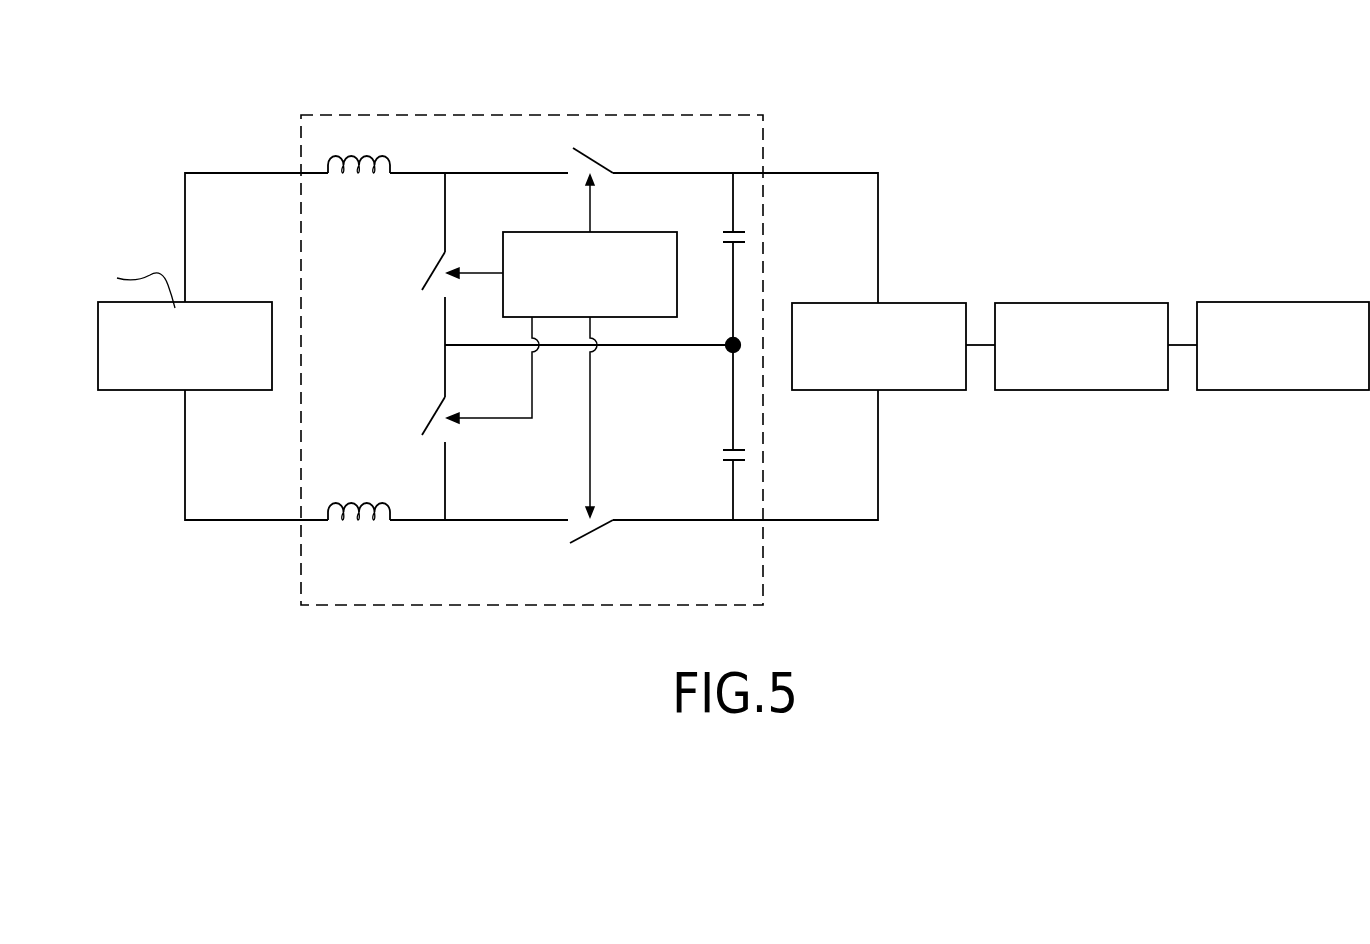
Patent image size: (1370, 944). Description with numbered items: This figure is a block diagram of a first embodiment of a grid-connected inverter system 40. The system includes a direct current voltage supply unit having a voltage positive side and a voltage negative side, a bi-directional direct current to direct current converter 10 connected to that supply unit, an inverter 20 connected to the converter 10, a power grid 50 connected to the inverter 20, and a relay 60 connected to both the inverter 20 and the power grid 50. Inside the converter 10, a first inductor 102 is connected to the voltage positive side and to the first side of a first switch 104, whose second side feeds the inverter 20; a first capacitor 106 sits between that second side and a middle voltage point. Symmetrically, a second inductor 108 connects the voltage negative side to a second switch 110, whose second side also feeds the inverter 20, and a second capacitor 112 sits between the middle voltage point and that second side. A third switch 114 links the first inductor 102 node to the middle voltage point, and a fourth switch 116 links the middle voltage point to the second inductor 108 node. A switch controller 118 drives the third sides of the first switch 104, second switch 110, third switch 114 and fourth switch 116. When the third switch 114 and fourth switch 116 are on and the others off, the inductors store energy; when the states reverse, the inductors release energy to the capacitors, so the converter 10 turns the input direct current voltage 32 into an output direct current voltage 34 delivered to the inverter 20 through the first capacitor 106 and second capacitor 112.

The bi-directional direct current to direct current converter 10 is at (532, 120).
The inverter 20 is at (890, 308).
The input direct current voltage 32 is at (257, 173).
The output direct current voltage 34 is at (807, 172).
The grid-connected inverter system 40 is at (748, 29).
The power grid 50 is at (1282, 310).
The relay 60 is at (1082, 308).
The first inductor 102 is at (358, 150).
The first switch 104 is at (568, 162).
The first capacitor 106 is at (747, 232).
The second inductor 108 is at (343, 500).
The second switch 110 is at (578, 515).
The second capacitor 112 is at (747, 452).
The third switch 114 is at (422, 302).
The fourth switch 116 is at (437, 438).
The switch controller 118 is at (602, 237).